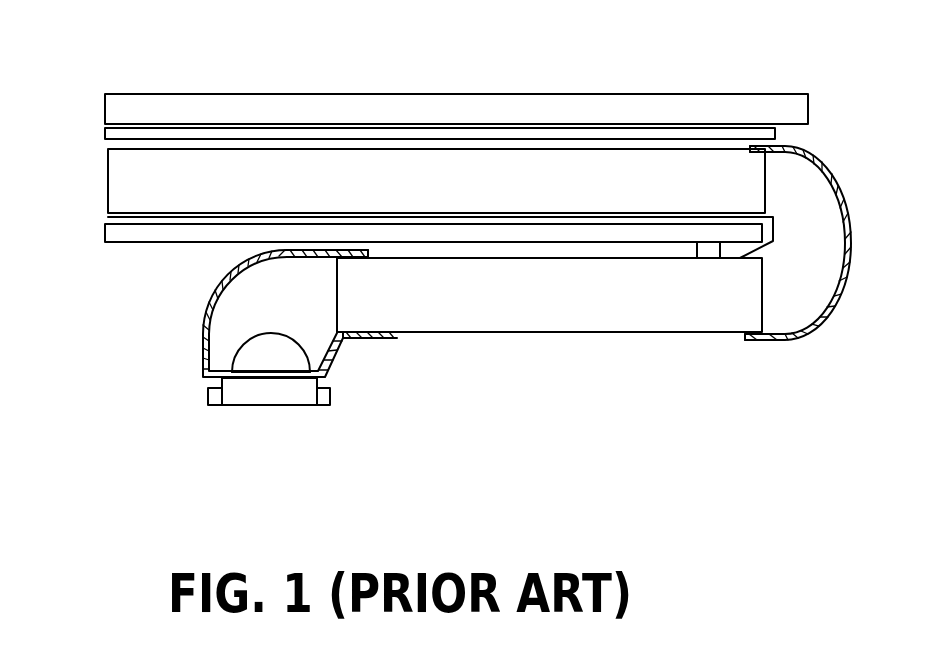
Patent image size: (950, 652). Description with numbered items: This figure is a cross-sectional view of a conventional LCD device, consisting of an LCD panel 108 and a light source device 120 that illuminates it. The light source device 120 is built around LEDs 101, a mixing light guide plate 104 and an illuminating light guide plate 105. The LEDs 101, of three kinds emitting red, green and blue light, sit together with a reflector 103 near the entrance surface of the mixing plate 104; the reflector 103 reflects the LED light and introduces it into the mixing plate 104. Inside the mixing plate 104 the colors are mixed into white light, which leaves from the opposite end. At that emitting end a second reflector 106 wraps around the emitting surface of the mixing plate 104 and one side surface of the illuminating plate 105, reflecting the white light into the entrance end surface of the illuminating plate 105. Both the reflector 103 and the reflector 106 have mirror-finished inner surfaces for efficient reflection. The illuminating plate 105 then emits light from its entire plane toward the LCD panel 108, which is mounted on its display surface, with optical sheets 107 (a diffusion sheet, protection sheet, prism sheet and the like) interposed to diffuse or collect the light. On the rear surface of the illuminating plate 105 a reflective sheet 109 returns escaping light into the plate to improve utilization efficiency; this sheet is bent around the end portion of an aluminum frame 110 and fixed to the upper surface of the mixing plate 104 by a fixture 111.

The LEDs 101 is at (269, 418).
The reflector 103 is at (243, 313).
The mixing light guide plate 104 is at (549, 352).
The illuminating light guide plate 105 is at (436, 111).
The reflector 106 is at (814, 307).
The optical sheets 107 is at (440, 75).
The LCD panel 108 is at (456, 67).
The reflective sheet 109 is at (440, 331).
The aluminum frame 110 is at (433, 335).
The fixture 111 is at (740, 344).
The light source device 120 is at (429, 261).